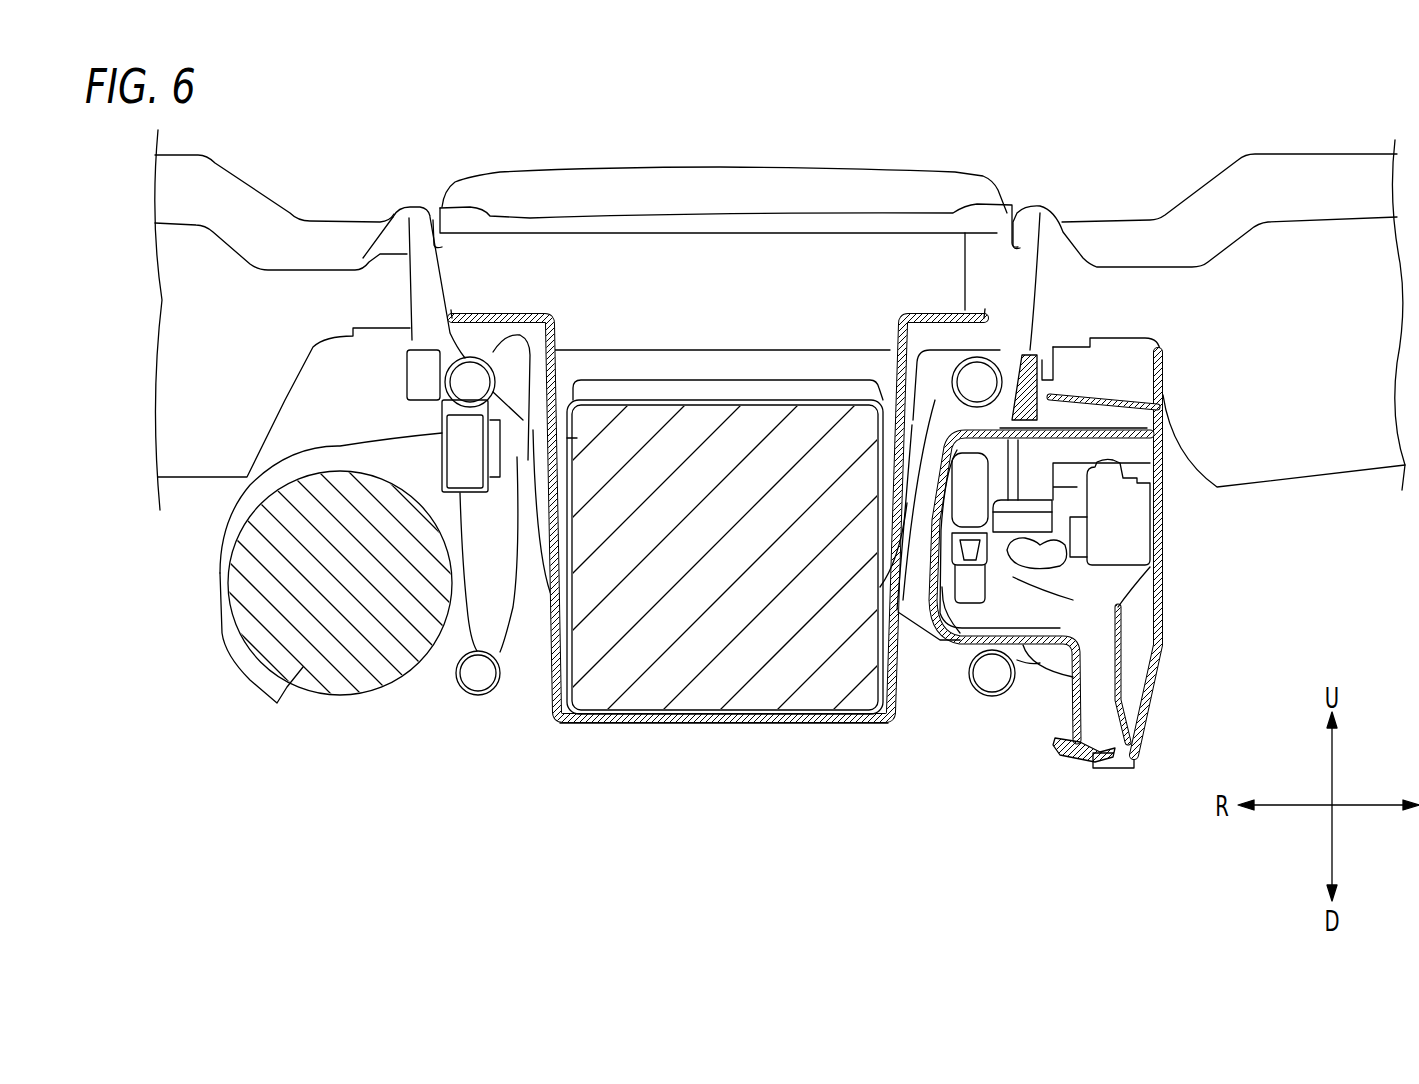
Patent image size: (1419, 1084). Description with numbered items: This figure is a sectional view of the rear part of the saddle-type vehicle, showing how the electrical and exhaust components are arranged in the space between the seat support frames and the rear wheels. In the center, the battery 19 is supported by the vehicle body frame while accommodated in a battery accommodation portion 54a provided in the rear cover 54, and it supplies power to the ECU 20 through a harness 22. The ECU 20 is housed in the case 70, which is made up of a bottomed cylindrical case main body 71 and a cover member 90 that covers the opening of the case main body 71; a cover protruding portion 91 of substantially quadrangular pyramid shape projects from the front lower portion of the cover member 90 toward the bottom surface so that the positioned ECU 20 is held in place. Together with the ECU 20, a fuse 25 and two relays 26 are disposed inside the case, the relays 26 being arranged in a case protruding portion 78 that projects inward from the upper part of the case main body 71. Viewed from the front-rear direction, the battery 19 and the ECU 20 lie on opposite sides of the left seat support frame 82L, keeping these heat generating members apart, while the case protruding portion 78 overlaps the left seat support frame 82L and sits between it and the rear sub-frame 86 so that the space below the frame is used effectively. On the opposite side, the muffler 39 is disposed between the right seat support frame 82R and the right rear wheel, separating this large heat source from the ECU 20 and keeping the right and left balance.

The battery 19 is at (622, 660).
The ECU 20 is at (1112, 578).
The harness 22 is at (942, 318).
The fuse 25 is at (1065, 503).
The relay 26 is at (957, 613).
The muffler 39 is at (352, 696).
The rear cover 54 is at (613, 268).
The battery accommodation portion 54a is at (685, 715).
The case 70 is at (1175, 522).
The case main body 71 is at (1061, 750).
The case protruding portion 78 is at (990, 617).
The right seat support frame 82R is at (470, 372).
The left seat support frame 82L is at (977, 357).
The rear sub-frame 86 is at (477, 692).
The cover member 90 is at (1157, 640).
The cover protruding portion 91 is at (1115, 683).